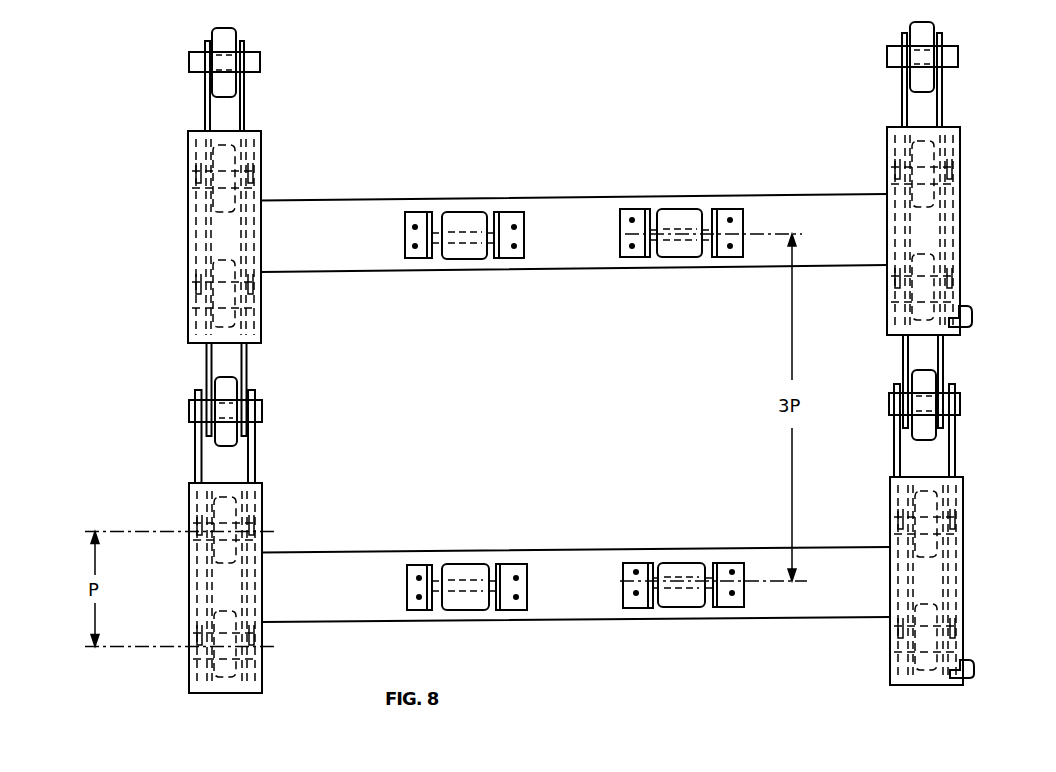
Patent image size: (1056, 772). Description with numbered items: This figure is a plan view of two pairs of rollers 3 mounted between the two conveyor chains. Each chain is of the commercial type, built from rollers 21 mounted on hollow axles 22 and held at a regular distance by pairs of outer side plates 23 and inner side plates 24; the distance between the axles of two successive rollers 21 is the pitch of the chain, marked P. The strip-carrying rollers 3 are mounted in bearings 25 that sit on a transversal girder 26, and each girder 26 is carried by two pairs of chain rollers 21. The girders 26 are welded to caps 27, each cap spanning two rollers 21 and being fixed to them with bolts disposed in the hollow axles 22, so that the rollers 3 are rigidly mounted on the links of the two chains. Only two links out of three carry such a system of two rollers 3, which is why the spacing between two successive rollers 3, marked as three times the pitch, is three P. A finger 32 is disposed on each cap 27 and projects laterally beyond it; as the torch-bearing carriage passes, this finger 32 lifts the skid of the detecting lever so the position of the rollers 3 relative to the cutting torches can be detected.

The rollers 3 is at (465, 251).
The rollers 21 is at (227, 85).
The hollow axles 22 is at (194, 60).
The outer side plates 23 is at (256, 458).
The inner side plates 24 is at (246, 360).
The bearings 25 is at (517, 218).
The transversal girder 26 is at (600, 212).
The caps 27 is at (947, 133).
The finger 32 is at (972, 318).